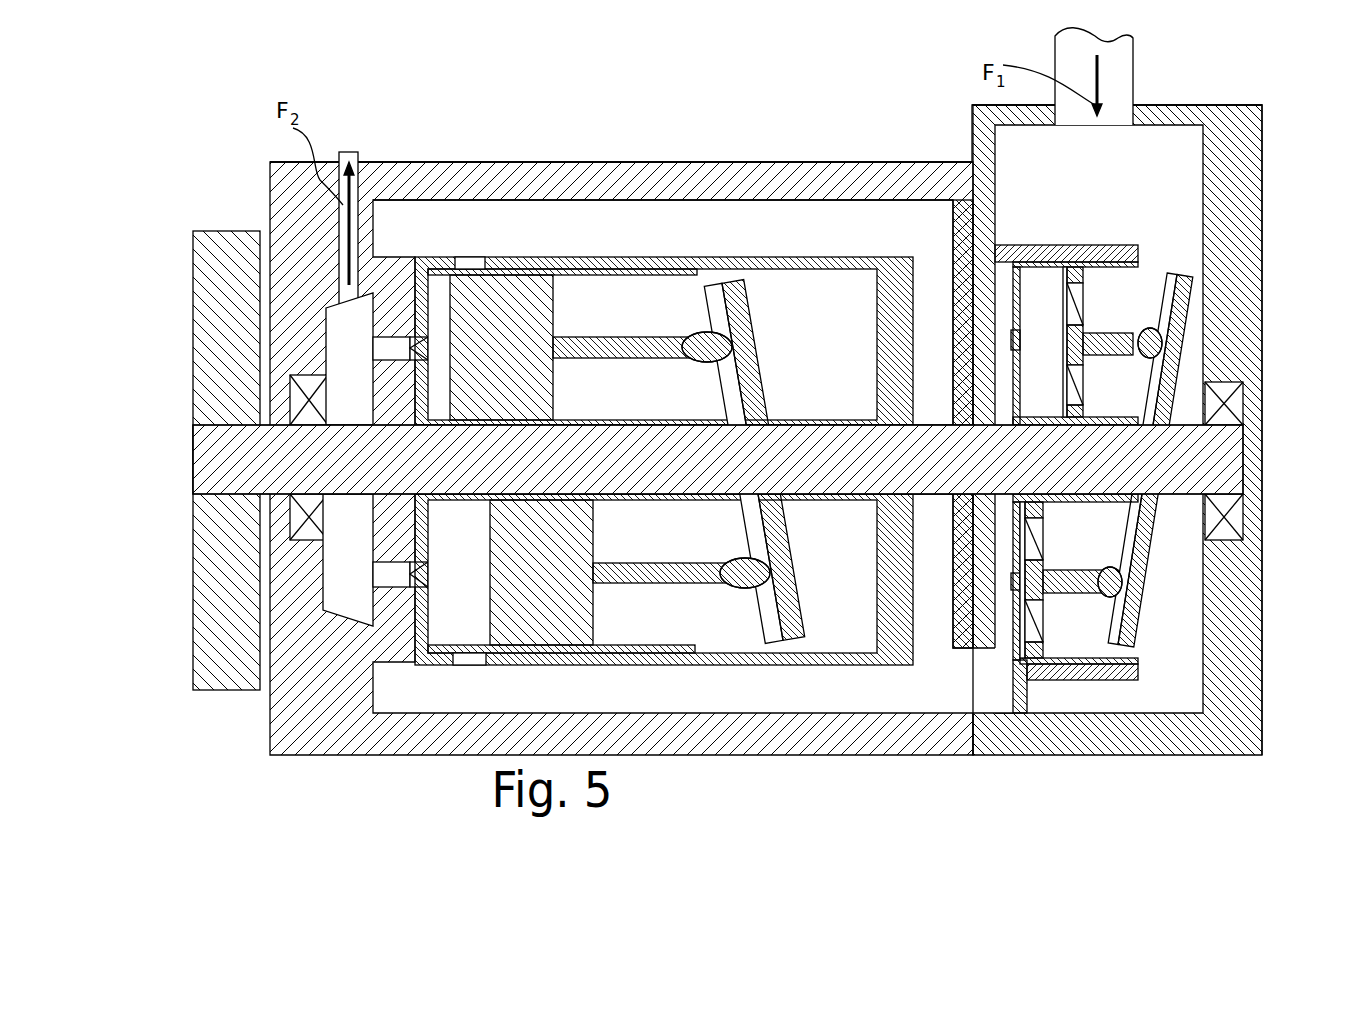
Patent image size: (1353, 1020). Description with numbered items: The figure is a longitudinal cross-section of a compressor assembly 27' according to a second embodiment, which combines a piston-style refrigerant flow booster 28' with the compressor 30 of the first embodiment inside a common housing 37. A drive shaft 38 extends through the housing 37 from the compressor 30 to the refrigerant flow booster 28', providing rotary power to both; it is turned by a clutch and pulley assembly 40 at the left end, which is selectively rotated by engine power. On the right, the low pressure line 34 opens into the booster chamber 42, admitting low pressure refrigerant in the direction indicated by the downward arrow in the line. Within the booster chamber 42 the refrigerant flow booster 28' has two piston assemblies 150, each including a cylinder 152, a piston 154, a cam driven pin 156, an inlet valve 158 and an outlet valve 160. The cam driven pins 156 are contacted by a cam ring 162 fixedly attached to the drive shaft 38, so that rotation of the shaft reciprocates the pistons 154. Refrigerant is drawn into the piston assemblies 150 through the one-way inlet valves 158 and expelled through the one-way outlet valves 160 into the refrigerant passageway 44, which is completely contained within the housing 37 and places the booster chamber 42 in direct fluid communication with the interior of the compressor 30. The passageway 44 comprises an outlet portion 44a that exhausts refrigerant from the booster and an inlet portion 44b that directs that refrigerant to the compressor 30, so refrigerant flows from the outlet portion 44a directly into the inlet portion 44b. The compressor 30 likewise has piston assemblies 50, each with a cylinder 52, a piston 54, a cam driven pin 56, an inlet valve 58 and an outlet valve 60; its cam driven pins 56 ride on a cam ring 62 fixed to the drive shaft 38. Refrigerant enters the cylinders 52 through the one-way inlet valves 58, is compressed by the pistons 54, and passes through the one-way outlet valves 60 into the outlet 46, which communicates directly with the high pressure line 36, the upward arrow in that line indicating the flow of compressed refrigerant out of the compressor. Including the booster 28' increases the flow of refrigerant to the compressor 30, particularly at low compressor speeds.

The compressor assembly 27' is at (766, 106).
The refrigerant flow booster 28' is at (1035, 428).
The compressor 30 is at (668, 156).
The low pressure line 34 is at (1135, 80).
The high pressure line 36 is at (355, 152).
The housing 37 is at (590, 150).
The drive shaft 38 is at (808, 425).
The clutch and pulley assembly 40 is at (205, 238).
The booster chamber 42 is at (1180, 153).
The refrigerant passageway 44 is at (766, 473).
The outlet portion 44a is at (1065, 448).
The inlet portion 44b is at (765, 697).
The outlet 46 is at (337, 348).
The piston assembly 50 is at (616, 248).
The cylinder 52 is at (604, 276).
The piston 54 is at (580, 615).
The cam driven pin 56 is at (688, 577).
The inlet valve 58 is at (470, 257).
The outlet valve 60 is at (410, 350).
The cam ring 62 is at (777, 540).
The piston assembly 150 is at (1040, 238).
The cylinder 152 is at (1138, 268).
The piston 154 is at (1082, 340).
The cam driven pin 156 is at (1142, 327).
The inlet valve 158 is at (1082, 297).
The outlet valve 160 is at (1016, 345).
The cam ring 162 is at (1142, 520).